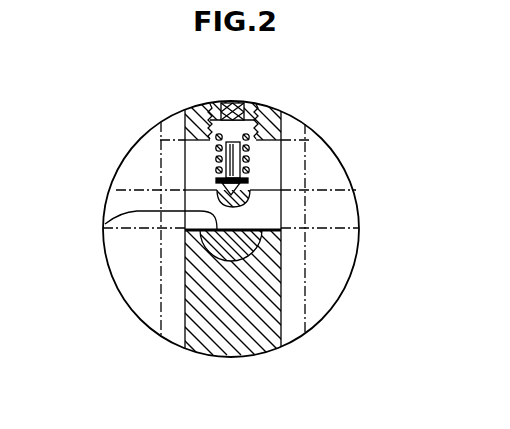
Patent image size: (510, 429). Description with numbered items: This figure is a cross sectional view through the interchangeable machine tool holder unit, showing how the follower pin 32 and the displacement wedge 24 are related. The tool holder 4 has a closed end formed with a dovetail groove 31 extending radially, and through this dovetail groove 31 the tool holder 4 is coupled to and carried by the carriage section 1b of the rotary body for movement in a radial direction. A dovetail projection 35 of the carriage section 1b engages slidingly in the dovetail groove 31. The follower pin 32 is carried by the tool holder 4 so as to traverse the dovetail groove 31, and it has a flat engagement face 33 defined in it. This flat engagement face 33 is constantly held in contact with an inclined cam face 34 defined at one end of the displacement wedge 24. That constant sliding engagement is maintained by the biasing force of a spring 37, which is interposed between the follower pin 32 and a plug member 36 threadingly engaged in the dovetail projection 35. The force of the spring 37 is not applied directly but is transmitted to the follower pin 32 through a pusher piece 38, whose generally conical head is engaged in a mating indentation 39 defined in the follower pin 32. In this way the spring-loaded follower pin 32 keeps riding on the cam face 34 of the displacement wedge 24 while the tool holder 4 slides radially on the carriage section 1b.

The tool holder 4 is at (128, 258).
The carriage section 1b is at (204, 330).
The displacement wedge 24 is at (235, 253).
The dovetail groove 31 is at (299, 247).
The follower pin 32 is at (262, 210).
The flat engagement face 33 is at (243, 236).
The inclined cam face 34 is at (107, 223).
The dovetail projection 35 is at (193, 125).
The plug member 36 is at (243, 103).
The spring 37 is at (250, 158).
The pusher piece 38 is at (252, 176).
The indentation 39 is at (216, 186).